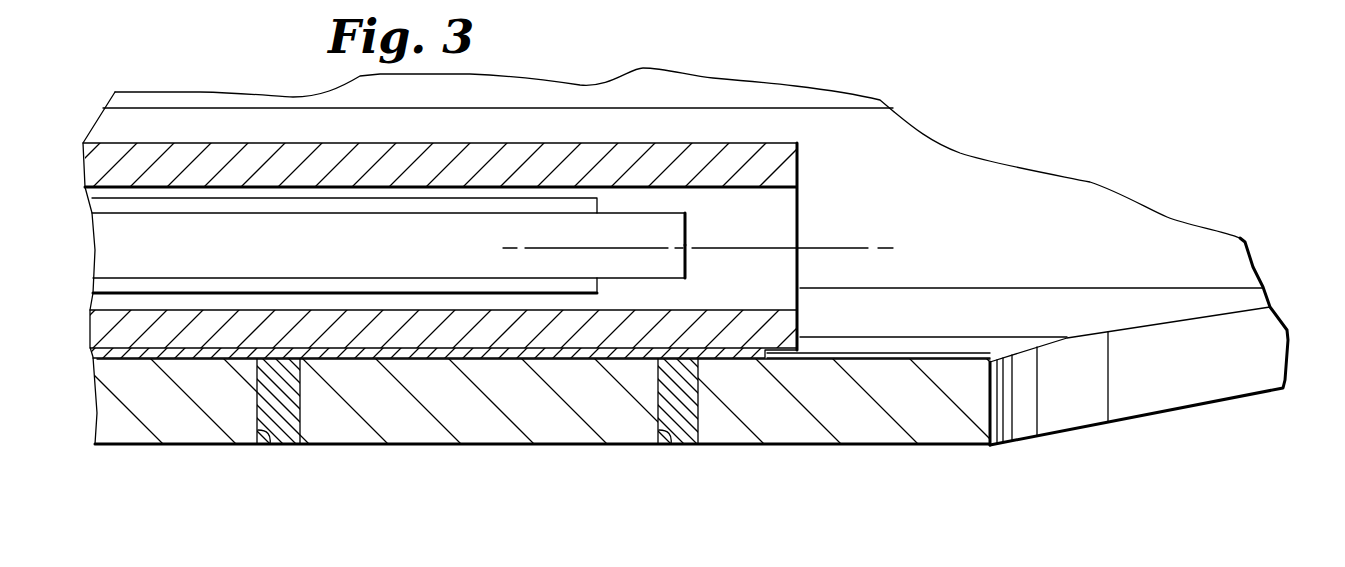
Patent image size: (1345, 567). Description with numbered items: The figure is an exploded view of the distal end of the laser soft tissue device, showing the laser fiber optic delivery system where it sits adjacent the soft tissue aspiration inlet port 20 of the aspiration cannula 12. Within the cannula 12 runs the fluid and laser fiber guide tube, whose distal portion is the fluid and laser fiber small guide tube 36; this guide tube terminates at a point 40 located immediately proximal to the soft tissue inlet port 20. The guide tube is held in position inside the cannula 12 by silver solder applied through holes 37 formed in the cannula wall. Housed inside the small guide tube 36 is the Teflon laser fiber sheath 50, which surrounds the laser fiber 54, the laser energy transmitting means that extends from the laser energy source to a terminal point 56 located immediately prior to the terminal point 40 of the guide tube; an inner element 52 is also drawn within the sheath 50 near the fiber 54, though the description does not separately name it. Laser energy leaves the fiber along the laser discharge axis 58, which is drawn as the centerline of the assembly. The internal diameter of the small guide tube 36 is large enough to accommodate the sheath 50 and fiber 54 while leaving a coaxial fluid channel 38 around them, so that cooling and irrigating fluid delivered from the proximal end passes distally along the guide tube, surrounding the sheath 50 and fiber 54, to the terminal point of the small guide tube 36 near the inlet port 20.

The aspiration cannula 12 is at (882, 445).
The soft tissue inlet port 20 is at (1108, 390).
The fluid and laser fiber small guide tube 36 is at (713, 338).
The holes 37 is at (271, 443).
The coaxial fluid channel 38 is at (388, 298).
The terminal point of the fluid and laser fiber guide tube 40 is at (800, 168).
The Teflon laser fiber sheath 50 is at (509, 203).
The inner tube 52 is at (599, 206).
The laser fiber 54 is at (680, 228).
The terminal point of the laser fiber 56 is at (688, 226).
The laser discharge axis 58 is at (842, 248).